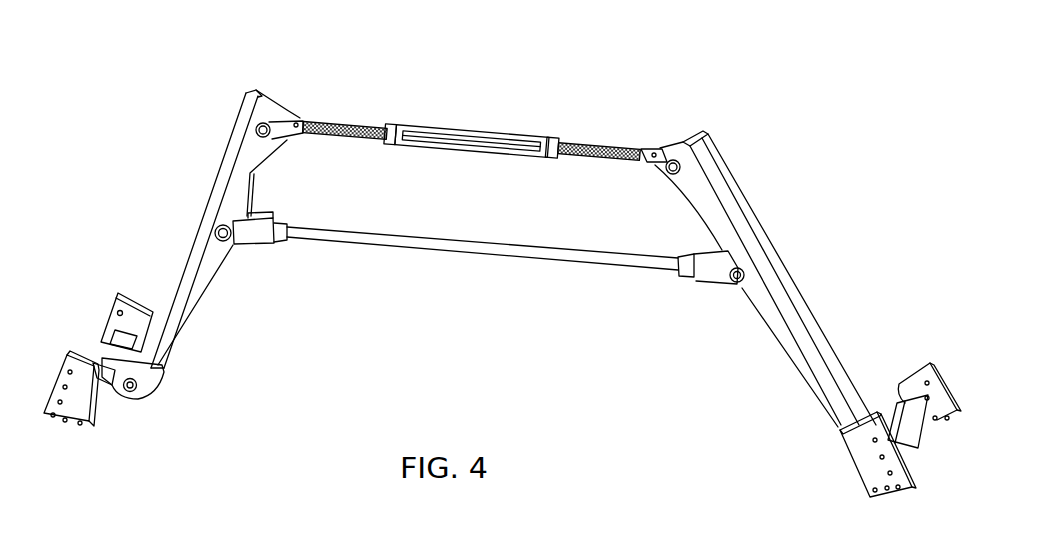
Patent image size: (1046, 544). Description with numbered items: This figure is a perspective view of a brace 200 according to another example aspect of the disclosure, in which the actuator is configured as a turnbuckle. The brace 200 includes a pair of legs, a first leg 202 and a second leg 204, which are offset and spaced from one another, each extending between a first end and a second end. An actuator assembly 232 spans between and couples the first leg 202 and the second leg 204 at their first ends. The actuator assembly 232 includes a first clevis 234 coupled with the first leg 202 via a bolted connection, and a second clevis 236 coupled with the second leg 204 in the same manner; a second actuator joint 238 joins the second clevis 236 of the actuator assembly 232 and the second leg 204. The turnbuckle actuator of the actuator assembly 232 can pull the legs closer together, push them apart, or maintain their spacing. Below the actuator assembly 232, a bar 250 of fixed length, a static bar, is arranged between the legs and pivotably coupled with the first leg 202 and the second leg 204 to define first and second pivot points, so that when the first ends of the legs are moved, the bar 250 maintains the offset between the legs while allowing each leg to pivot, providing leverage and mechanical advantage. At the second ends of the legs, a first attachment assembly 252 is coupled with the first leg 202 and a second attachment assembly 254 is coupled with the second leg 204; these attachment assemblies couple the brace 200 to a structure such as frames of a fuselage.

The brace 200 is at (627, 106).
The first leg 202 is at (200, 173).
The second leg 204 is at (757, 204).
The actuator assembly 232 is at (510, 120).
The first clevis 234 is at (293, 118).
The second clevis 236 is at (657, 151).
The second actuator joint 238 is at (366, 123).
The bar 250 is at (466, 245).
The first attachment assembly 252 is at (104, 304).
The second attachment assembly 254 is at (917, 353).